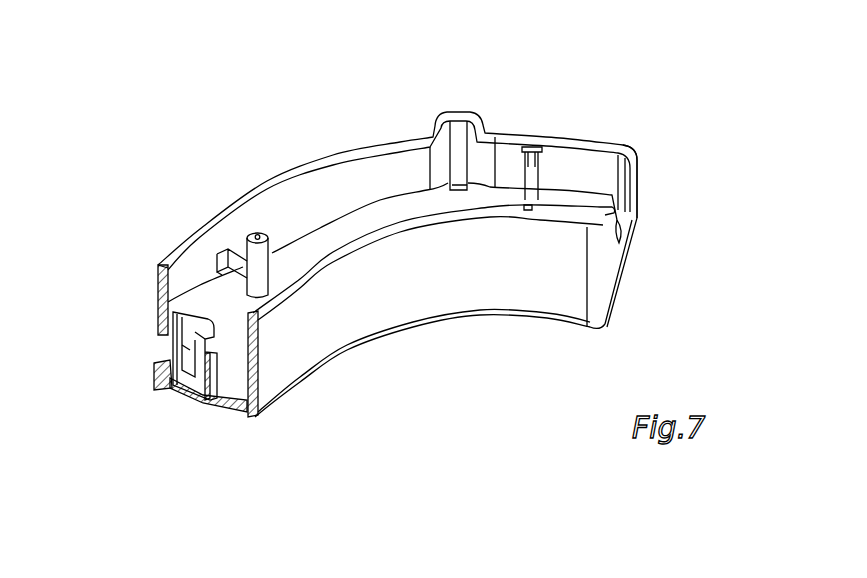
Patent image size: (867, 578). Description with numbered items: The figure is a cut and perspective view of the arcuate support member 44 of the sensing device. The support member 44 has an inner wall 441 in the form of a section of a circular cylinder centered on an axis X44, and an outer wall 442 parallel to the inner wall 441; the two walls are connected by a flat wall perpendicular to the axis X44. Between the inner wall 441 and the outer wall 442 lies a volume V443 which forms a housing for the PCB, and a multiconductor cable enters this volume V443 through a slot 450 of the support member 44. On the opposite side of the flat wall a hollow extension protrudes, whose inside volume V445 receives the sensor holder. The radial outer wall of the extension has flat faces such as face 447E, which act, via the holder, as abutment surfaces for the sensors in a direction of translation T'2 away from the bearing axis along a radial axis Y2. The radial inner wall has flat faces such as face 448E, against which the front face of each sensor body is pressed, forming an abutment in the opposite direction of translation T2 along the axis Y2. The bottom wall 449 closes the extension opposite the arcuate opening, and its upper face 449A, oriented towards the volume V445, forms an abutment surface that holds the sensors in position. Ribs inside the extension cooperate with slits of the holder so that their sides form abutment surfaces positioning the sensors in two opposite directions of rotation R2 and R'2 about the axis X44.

The support member 44 is at (202, 158).
The inner wall 441 is at (467, 282).
The outer wall 442 is at (377, 180).
The volume V443 is at (340, 192).
The inside volume V445 is at (168, 354).
The flat face of radial outer wall 447E is at (176, 336).
The wall portion face of radial inner wall 448E is at (180, 345).
The bottom wall 449 is at (185, 400).
The upper face 449A is at (219, 360).
The slot 450 is at (636, 222).
The axis X44 is at (562, 560).
The direction of translation T2 is at (97, 320).
The direction of translation T'2 is at (67, 314).
The direction of rotation R2 is at (425, 516).
The direction of rotation R'2 is at (409, 535).
The axis Y2 is at (512, 531).